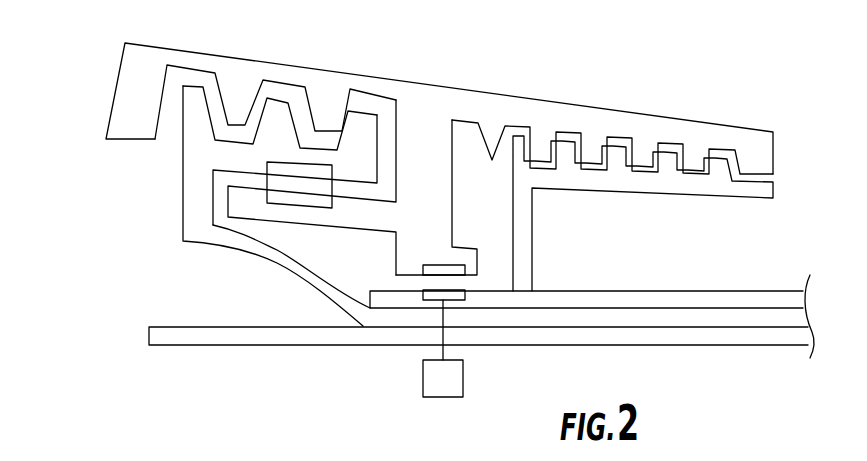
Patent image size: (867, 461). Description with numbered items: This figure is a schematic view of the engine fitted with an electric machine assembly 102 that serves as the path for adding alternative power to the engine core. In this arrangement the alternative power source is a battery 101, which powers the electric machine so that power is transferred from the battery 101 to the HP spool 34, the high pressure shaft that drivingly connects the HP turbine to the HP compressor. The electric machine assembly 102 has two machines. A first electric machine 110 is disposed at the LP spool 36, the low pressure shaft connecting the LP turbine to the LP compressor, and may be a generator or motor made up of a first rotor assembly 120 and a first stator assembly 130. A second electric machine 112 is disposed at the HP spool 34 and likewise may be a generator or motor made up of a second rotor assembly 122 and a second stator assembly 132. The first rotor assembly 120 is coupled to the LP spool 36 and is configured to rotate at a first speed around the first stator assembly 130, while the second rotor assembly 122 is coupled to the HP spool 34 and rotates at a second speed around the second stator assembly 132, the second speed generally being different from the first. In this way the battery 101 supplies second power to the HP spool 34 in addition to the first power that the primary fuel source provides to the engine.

The electric machine assembly 102 is at (121, 256).
The first electric machine 110 is at (277, 127).
The first rotor assembly 120 is at (308, 163).
The first stator assembly 130 is at (285, 207).
The LP spool 36 is at (210, 245).
The second electric machine 112 is at (478, 222).
The HP spool 34 is at (613, 291).
The second stator assembly 132 is at (440, 265).
The second rotor assembly 122 is at (455, 300).
The battery 101 is at (423, 380).